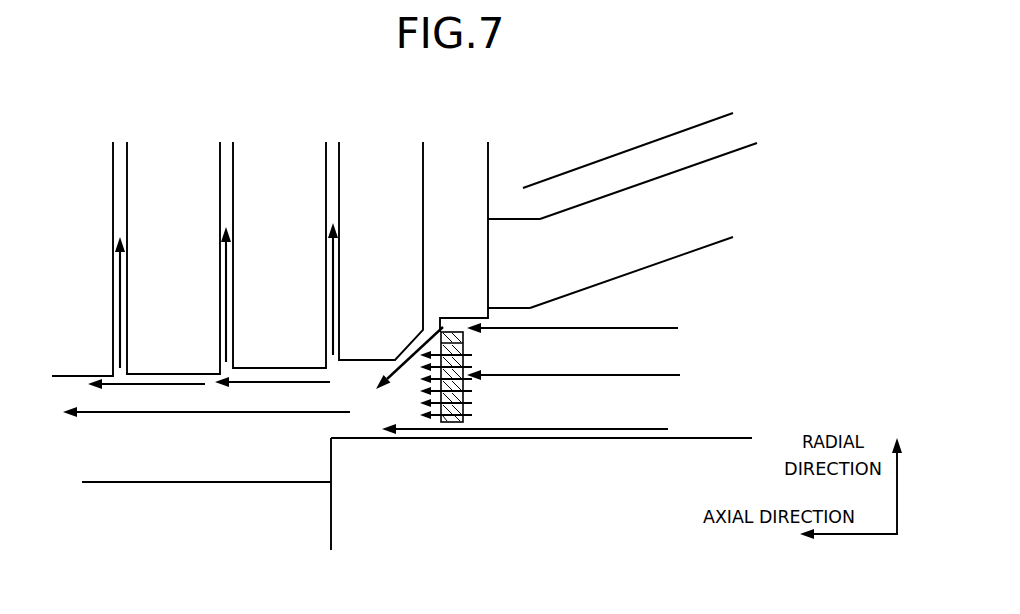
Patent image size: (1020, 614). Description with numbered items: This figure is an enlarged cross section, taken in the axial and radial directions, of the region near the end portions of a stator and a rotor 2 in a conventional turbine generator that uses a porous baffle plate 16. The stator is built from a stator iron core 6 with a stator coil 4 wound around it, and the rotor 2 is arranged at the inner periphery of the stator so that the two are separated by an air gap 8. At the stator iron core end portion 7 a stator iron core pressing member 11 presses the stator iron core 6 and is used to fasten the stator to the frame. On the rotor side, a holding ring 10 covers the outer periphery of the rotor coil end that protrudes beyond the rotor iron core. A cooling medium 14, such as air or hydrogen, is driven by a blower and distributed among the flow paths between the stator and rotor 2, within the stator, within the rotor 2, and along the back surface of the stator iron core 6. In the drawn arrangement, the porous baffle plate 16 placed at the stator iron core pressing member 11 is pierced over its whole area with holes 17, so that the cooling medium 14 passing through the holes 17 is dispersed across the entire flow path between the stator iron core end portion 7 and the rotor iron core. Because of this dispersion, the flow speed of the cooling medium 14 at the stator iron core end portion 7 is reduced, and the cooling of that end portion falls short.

The rotor 2 is at (146, 512).
The stator coil 4 is at (713, 218).
The stator iron core 6 is at (274, 157).
The stator iron core end portion 7 is at (382, 157).
The air gap 8 is at (268, 470).
The holding ring 10 is at (708, 437).
The stator iron core pressing member 11 is at (451, 157).
The cooling medium 14 is at (660, 327).
The porous baffle plate 16 is at (473, 410).
The holes 17 is at (470, 352).